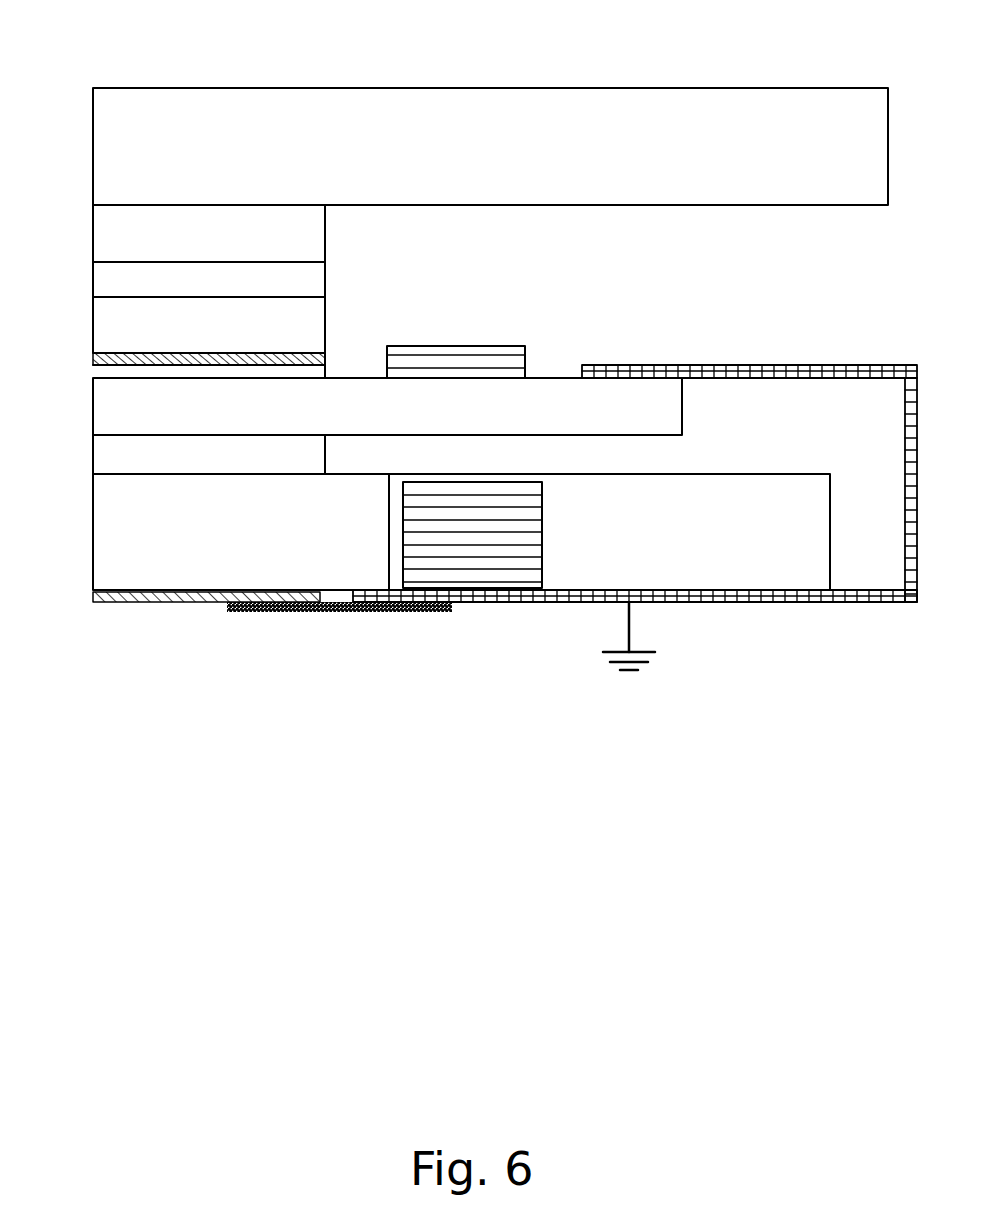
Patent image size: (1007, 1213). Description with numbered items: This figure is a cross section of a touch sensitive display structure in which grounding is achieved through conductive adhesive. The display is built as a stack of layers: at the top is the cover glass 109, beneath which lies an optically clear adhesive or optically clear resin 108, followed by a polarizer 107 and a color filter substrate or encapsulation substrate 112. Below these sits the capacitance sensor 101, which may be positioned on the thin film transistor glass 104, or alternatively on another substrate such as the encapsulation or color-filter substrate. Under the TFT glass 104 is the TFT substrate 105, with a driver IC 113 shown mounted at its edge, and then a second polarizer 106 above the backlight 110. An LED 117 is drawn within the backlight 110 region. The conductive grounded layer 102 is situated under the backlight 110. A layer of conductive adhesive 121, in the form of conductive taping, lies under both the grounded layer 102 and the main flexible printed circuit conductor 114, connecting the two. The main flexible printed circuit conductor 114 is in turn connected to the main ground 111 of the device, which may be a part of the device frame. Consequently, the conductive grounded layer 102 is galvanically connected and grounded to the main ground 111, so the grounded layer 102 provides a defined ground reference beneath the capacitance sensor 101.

The cover glass 109 is at (137, 88).
The optically clear adhesive or optically clear resin 108 is at (325, 237).
The polarizer 107 is at (93, 280).
The color filter substrate or encapsulation substrate 112 is at (325, 318).
The thin film transistor glass 104 is at (93, 378).
The capacitance sensor 101 is at (325, 357).
The TFT substrate 105 is at (553, 380).
The driver IC 113 is at (478, 346).
The polarizer 106 is at (93, 455).
The backlight 110 is at (93, 534).
The LED 117 is at (542, 524).
The main flexible printed circuit conductor 114 is at (908, 365).
The conductive grounded layer 102 is at (145, 603).
The layer of conductive adhesive 121 is at (335, 612).
The main ground 111 is at (655, 652).